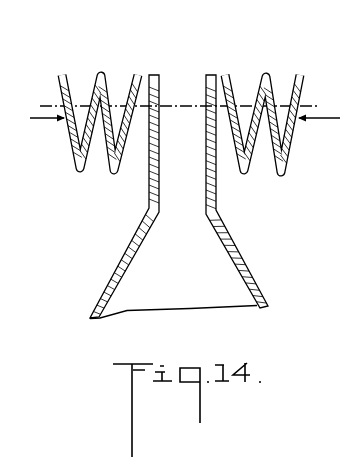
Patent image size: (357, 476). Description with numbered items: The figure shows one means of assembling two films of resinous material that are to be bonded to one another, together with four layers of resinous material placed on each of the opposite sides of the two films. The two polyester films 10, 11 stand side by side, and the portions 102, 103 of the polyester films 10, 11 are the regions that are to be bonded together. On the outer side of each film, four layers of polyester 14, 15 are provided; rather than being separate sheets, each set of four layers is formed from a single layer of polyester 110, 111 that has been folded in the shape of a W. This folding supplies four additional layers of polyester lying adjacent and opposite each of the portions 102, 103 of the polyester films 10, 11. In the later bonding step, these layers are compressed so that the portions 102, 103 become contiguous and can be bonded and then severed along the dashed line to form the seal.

The four layers of polyester 14 is at (94, 56).
The four layers of polyester 15 is at (276, 68).
The portion of polyester film 102 is at (165, 93).
The portion of polyester film 103 is at (199, 118).
The single layer of polyester 110 is at (77, 172).
The single layer of polyester 111 is at (283, 174).
The polyester film 10 is at (120, 268).
The polyester film 11 is at (248, 270).